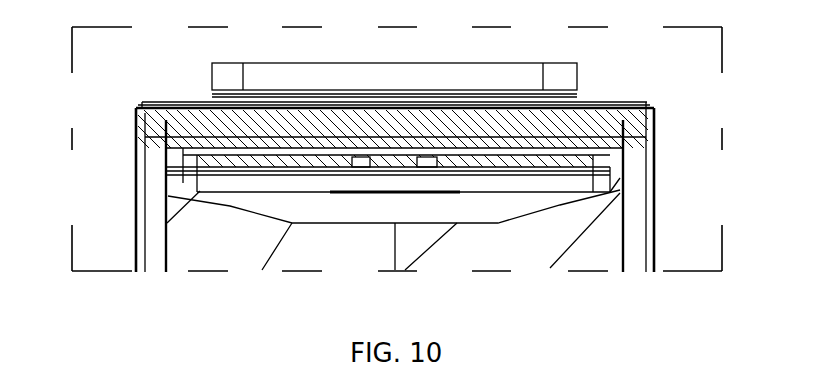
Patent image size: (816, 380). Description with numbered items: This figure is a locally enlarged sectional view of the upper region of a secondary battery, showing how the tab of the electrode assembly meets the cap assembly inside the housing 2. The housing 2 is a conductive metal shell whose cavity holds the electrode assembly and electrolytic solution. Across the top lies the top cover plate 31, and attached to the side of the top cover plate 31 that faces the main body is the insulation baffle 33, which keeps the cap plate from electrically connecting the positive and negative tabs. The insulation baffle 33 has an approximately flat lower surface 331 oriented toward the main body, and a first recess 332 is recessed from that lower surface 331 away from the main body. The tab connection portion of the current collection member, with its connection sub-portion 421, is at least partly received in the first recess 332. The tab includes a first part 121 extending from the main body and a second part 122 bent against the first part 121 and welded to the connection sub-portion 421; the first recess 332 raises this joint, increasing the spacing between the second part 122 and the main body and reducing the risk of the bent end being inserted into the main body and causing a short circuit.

The housing 2 is at (650, 244).
The top cover plate 31 is at (607, 103).
The insulation baffle 33 is at (193, 102).
The first recess 332 is at (162, 147).
The lower surface 331 is at (166, 175).
The first part 121 is at (166, 200).
The second part 122 is at (247, 172).
The connection sub-portion 421 is at (343, 170).